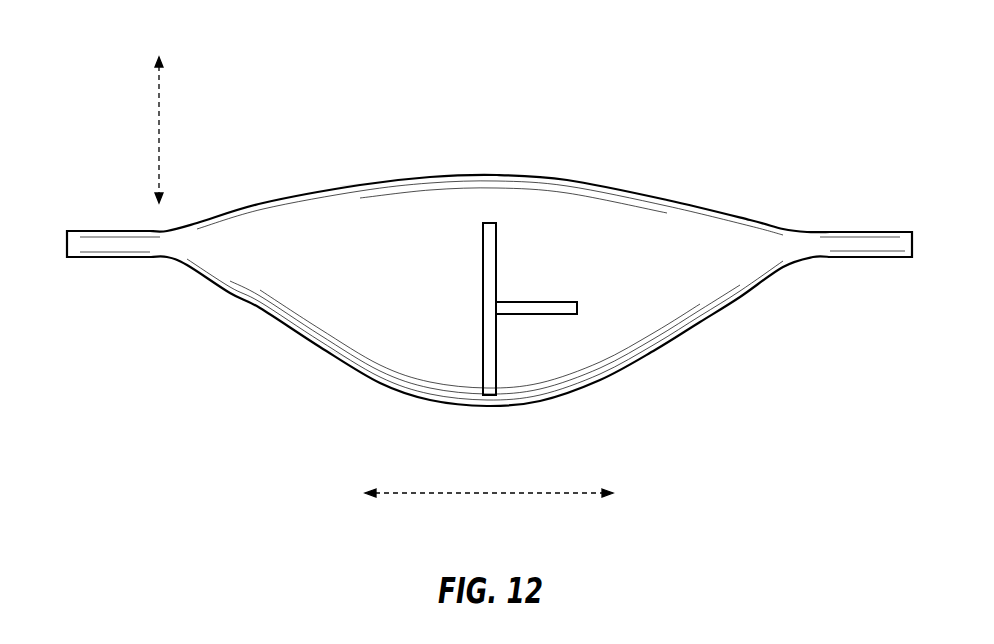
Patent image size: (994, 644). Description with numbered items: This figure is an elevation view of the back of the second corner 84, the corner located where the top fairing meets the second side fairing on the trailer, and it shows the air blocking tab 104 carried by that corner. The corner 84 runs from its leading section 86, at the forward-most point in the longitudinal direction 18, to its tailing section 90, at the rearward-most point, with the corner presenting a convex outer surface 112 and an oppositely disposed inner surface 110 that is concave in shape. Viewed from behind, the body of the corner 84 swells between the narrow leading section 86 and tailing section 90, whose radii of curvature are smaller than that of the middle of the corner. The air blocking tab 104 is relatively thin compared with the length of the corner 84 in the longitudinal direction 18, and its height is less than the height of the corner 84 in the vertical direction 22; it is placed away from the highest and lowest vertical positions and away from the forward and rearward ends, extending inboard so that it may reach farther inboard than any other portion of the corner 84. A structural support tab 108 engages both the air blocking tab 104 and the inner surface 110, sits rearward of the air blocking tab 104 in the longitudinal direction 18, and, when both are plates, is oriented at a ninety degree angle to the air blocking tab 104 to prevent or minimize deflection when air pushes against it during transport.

The corner 84 is at (536, 102).
The leading section 86 is at (67, 244).
The tailing section 90 is at (912, 244).
The outer surface 112 is at (345, 178).
The inner surface 110 is at (340, 291).
The air blocking tab 104 is at (483, 362).
The structural support tab 108 is at (533, 302).
The vertical direction 22 is at (159, 130).
The longitudinal direction 18 is at (490, 495).